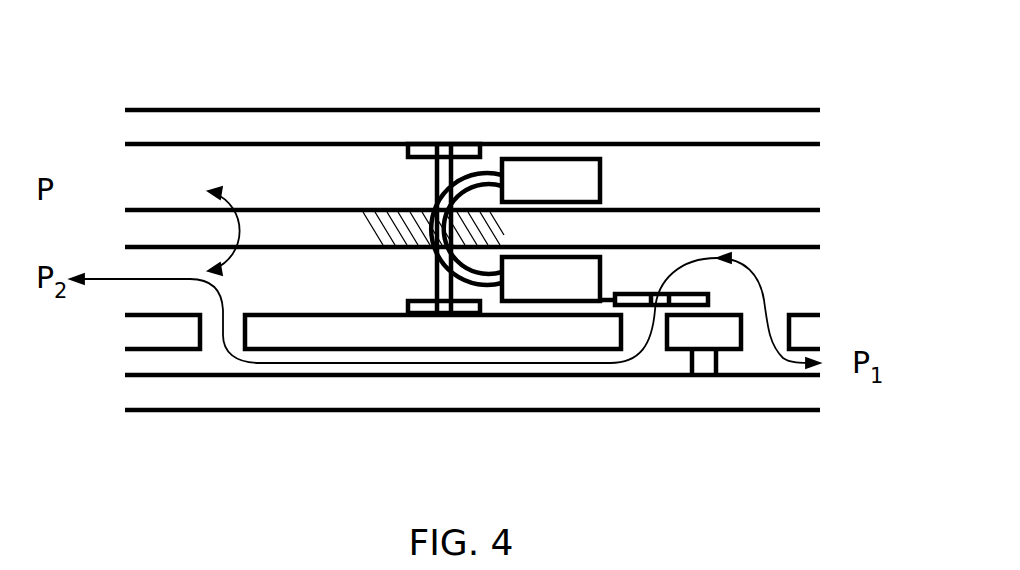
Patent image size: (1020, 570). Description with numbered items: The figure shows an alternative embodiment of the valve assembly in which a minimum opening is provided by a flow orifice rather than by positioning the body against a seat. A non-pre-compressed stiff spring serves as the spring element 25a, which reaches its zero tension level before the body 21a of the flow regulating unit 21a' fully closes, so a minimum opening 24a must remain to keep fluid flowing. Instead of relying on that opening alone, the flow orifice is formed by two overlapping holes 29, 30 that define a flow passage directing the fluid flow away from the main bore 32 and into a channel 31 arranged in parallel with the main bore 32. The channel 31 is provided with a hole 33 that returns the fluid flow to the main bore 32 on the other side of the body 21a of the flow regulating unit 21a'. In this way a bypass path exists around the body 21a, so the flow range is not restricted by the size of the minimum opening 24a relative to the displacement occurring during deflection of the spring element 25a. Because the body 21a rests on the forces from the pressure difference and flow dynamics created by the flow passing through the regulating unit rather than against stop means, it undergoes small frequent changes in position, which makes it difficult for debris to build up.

The flow regulating unit 21a' is at (376, 159).
The body of the flow regulating unit 21a is at (563, 175).
The spring element 25a is at (485, 172).
The minimum opening 24a is at (656, 307).
The overlapping hole 29 is at (617, 335).
The overlapping hole 30 is at (678, 300).
The channel 31 is at (430, 363).
The main bore 32 is at (218, 174).
The hole 33 is at (230, 338).